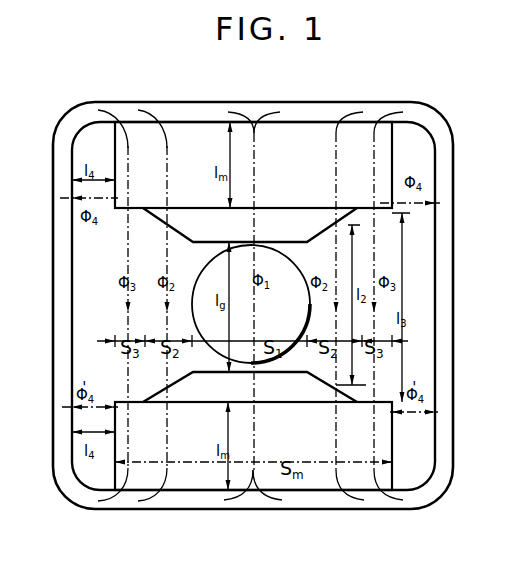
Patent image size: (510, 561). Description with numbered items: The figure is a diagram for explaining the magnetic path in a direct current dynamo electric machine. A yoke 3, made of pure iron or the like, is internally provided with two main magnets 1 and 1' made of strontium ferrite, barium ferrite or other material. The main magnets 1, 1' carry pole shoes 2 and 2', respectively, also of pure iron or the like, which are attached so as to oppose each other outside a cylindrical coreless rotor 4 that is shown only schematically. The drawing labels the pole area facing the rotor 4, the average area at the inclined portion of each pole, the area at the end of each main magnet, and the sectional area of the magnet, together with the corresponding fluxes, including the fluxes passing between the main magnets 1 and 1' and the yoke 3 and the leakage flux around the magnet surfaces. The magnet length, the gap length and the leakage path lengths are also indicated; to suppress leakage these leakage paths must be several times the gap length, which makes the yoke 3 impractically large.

The main magnet 1 is at (253, 142).
The main magnet 1' is at (253, 471).
The pole shoe 2 is at (250, 211).
The pole shoe 2' is at (250, 401).
The yoke 3 is at (55, 352).
The cylindrical coreless rotor 4 is at (206, 271).